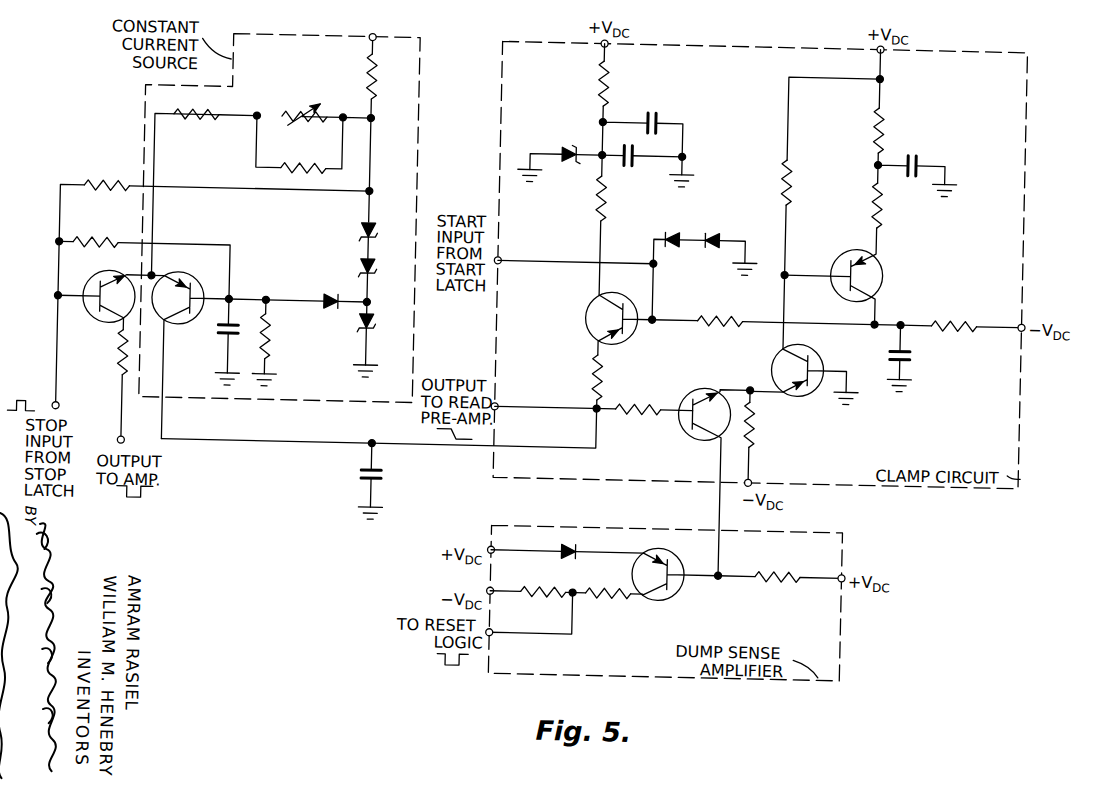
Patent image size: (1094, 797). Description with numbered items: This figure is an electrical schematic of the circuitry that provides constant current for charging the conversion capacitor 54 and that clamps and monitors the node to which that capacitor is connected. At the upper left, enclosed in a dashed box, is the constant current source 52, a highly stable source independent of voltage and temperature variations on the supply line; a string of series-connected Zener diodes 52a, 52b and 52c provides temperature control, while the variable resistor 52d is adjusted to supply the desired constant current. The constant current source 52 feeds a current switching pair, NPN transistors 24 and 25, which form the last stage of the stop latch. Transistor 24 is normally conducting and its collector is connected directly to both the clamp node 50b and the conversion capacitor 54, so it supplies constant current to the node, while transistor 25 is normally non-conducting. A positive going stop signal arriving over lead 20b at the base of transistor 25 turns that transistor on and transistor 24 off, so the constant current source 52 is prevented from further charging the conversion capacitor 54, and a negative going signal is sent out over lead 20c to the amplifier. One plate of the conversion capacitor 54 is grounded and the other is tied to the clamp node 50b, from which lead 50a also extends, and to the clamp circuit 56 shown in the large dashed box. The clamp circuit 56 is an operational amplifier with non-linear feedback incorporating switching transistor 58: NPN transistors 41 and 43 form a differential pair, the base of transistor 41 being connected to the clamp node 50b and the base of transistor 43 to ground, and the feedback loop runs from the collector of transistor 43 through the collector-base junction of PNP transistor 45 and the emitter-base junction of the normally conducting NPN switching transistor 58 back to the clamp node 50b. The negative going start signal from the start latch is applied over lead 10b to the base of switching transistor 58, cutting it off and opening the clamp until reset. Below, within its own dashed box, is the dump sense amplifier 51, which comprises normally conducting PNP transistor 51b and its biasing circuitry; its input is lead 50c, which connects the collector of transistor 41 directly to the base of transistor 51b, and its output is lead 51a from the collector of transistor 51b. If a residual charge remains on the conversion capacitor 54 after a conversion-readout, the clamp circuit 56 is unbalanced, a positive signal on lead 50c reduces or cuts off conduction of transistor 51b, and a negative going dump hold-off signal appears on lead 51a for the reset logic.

The constant current source 52 is at (414, 143).
The Zener diode 52a is at (358, 232).
The Zener diode 52b is at (359, 274).
The Zener diode 52c is at (355, 324).
The variable resistor 52d is at (298, 106).
The transistor 25 is at (92, 296).
The transistor 24 is at (190, 291).
The lead 20b is at (56, 389).
The lead 20c is at (124, 412).
The conversion capacitor 54 is at (366, 481).
The lead 10b is at (532, 264).
The switching transistor 58 is at (593, 314).
The lead 50a is at (525, 411).
The clamp node 50b is at (595, 404).
The lead 50c is at (722, 499).
The transistor 41 is at (702, 389).
The transistor 43 is at (781, 359).
The transistor 45 is at (876, 261).
The clamp circuit 56 is at (1022, 395).
The dump sense amplifier 51 is at (843, 542).
The lead 51a is at (560, 637).
The transistor 51b is at (681, 587).